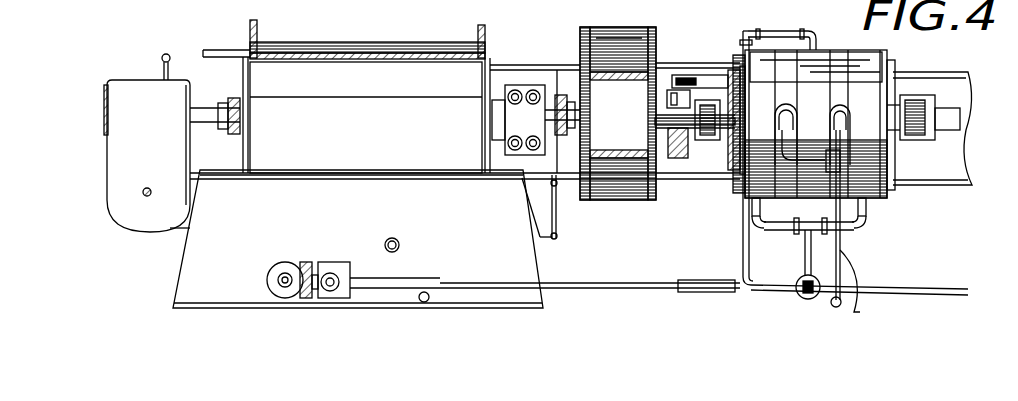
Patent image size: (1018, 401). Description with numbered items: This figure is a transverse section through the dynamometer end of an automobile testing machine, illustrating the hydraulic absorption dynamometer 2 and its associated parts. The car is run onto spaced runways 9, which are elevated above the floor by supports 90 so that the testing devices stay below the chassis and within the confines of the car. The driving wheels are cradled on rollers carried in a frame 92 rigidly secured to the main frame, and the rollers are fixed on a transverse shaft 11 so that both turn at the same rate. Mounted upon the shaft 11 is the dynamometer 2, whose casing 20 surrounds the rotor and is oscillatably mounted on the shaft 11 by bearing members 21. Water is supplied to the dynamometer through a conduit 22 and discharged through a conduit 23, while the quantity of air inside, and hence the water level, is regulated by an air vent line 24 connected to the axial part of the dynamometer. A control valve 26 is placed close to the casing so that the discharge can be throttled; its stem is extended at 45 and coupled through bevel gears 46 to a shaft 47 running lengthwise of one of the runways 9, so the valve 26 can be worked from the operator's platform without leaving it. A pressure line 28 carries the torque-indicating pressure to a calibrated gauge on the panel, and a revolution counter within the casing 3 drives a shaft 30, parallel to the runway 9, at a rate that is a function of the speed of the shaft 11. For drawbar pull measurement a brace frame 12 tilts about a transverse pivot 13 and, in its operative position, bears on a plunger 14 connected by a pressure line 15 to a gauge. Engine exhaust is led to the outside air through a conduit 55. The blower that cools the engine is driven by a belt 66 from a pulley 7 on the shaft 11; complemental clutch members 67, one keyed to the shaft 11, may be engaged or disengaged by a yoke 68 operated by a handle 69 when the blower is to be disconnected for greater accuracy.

The hydraulic absorption dynamometer 2 is at (893, 56).
The casing 3 is at (122, 147).
The pulley 7 is at (585, 52).
The runways 9 is at (258, 40).
The transverse shaft 11 is at (689, 150).
The brace frame 12 is at (712, 72).
The transverse pivot 13 is at (679, 74).
The plunger 14 is at (690, 76).
The pressure line 15 is at (660, 150).
The casing 20 is at (818, 60).
The bearing members 21 is at (917, 113).
The water supply conduit 22 is at (858, 231).
The discharge conduit 23 is at (802, 262).
The air vent line 24 is at (742, 250).
The control valve 26 is at (799, 297).
The pressure line 28 is at (430, 302).
The shaft 30 is at (144, 195).
The extended valve stem 45 is at (620, 284).
The bevel gears 46 is at (302, 264).
The shaft 47 is at (280, 285).
The exhaust conduit 55 is at (400, 243).
The belt 66 is at (622, 35).
The clutch members 67 is at (568, 115).
The yoke 68 is at (558, 222).
The handle 69 is at (170, 55).
The supports 90 is at (193, 250).
The frame 92 is at (247, 147).